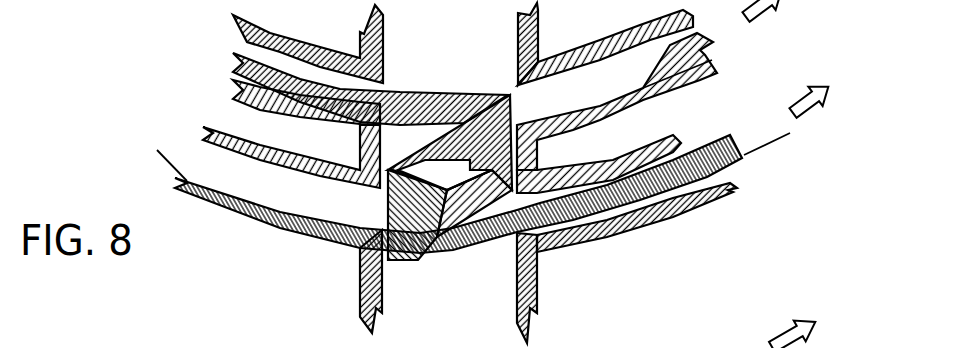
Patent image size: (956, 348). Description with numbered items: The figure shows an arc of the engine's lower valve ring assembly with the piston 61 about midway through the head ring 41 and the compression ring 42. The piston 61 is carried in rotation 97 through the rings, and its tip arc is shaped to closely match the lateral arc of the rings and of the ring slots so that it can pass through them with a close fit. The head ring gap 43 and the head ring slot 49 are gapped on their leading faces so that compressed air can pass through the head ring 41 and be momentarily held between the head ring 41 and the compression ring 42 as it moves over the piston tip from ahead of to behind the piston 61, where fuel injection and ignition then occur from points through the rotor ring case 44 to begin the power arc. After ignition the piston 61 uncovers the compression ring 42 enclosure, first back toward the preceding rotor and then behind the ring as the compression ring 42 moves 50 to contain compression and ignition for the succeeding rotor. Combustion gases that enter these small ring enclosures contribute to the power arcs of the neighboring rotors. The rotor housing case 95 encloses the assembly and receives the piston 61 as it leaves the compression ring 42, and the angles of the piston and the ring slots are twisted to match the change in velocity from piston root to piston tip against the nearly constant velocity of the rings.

The head ring 41 is at (237, 62).
The compression ring 42 is at (173, 167).
The head ring gap 43 is at (605, 57).
The rotor ring case 44 is at (237, 100).
The head ring slot 49 is at (442, 169).
The ring movement 50 is at (768, 8).
The piston 61 is at (449, 169).
The rotor housing case 95 is at (357, 43).
The rotation 97 is at (437, 228).